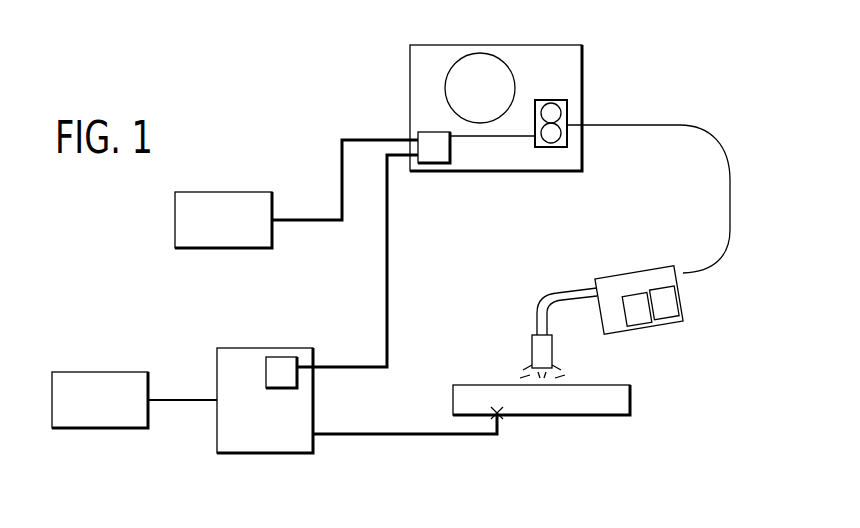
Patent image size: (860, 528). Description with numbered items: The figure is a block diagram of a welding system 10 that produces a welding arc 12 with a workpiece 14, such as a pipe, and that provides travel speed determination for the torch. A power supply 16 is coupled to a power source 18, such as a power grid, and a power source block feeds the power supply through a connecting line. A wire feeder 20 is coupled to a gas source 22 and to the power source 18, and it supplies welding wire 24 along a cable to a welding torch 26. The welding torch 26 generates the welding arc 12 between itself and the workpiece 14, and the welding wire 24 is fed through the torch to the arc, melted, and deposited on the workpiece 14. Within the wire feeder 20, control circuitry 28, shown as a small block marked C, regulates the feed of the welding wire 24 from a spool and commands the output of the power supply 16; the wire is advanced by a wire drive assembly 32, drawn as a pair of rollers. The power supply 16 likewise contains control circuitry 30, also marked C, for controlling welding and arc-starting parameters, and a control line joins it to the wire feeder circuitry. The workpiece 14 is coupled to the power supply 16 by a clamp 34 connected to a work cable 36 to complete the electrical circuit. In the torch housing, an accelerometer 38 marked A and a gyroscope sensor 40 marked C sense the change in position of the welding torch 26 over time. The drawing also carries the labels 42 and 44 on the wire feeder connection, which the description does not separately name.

The welding system 10 is at (672, 56).
The welding arc 12 is at (532, 363).
The workpiece 14 is at (633, 393).
The power supply 16 is at (266, 348).
The power source 18 is at (100, 372).
The wire feeder 20 is at (498, 45).
The gas source 22 is at (222, 192).
The welding wire 24 is at (573, 122).
The welding torch 26 is at (662, 294).
The control circuitry 28 is at (452, 153).
The control circuitry 30 is at (283, 357).
The wire drive assembly 32 is at (558, 141).
The clamp 34 is at (502, 420).
The work cable 36 is at (407, 435).
The accelerometer 38 is at (637, 310).
The gyroscope sensor 40 is at (637, 272).
The gas connection 42 is at (550, 144).
The wire connection 44 is at (550, 102).